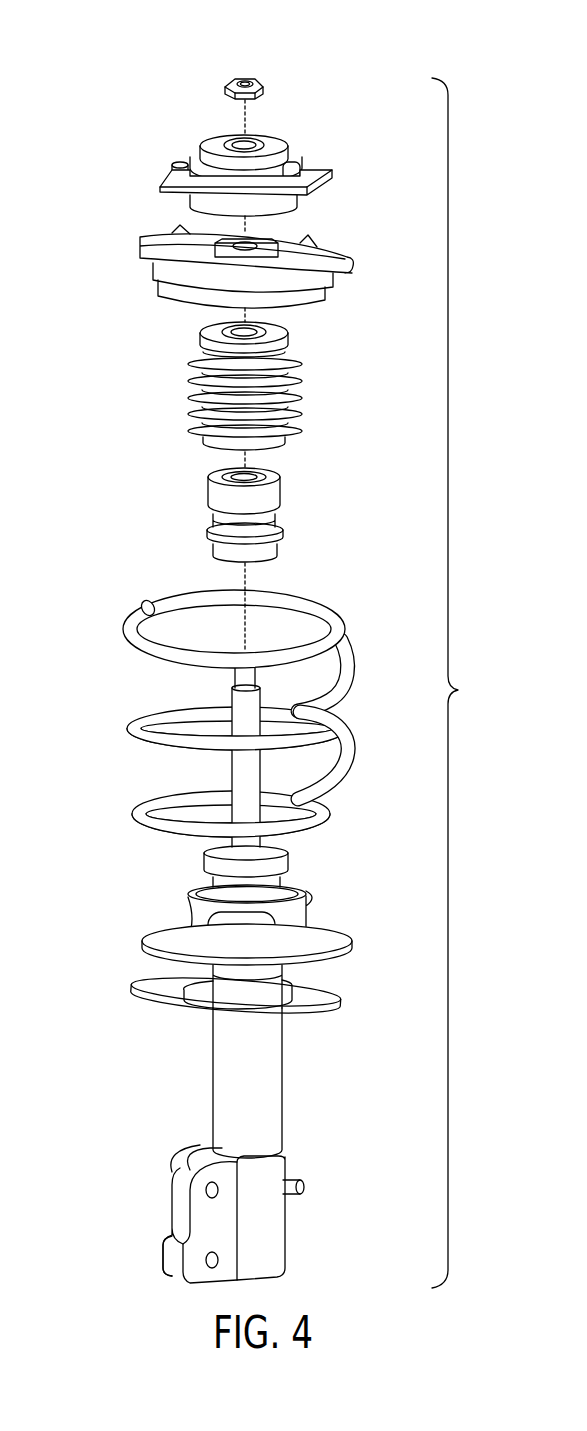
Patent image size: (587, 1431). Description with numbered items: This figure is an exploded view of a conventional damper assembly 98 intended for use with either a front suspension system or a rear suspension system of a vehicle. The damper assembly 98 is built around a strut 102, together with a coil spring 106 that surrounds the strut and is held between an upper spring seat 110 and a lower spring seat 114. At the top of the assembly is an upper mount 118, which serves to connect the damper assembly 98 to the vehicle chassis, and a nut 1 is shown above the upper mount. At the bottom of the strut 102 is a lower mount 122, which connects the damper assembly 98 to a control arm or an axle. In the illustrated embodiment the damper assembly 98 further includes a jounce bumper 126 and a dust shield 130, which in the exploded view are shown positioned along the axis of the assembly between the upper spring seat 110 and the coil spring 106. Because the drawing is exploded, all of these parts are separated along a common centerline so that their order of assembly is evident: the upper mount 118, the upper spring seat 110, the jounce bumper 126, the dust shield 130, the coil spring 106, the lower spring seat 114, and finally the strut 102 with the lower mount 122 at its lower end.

The nut 1 is at (280, 86).
The upper mount 118 is at (167, 166).
The upper spring seat 110 is at (133, 243).
The jounce bumper 126 is at (193, 390).
The dust shield 130 is at (208, 521).
The coil spring 106 is at (127, 626).
The lower spring seat 114 is at (153, 925).
The strut 102 is at (212, 1105).
The lower mount 122 is at (182, 1249).
The damper assembly 98 is at (461, 683).